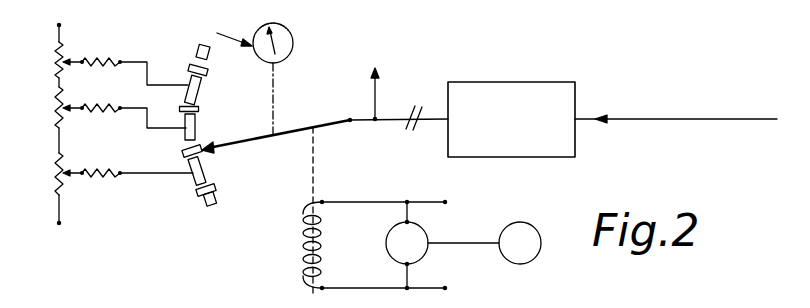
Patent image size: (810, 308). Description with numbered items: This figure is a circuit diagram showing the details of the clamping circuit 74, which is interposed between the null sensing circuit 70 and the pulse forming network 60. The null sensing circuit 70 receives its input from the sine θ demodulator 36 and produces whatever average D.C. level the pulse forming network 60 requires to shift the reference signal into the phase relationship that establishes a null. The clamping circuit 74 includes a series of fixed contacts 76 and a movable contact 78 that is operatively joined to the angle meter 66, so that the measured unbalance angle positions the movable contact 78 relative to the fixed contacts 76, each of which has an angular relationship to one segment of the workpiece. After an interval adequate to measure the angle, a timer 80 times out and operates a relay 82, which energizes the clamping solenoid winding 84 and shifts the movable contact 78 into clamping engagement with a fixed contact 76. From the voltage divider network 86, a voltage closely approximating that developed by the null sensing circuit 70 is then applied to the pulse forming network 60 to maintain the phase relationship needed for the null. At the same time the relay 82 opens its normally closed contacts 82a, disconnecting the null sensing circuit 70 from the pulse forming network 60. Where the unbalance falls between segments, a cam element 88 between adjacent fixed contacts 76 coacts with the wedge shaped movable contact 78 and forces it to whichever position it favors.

The sin demodulator 36 is at (679, 121).
The pulse forming network 60 is at (397, 74).
The angle meter 66 is at (288, 55).
The null sensing circuit 70 is at (555, 87).
The clamping circuit 74 is at (256, 144).
The fixed contacts 76 is at (198, 90).
The movable contact 78 is at (323, 122).
The timer 80 is at (533, 232).
The relay 82 is at (419, 228).
The normally closed contacts 82a is at (417, 127).
The clamping solenoid winding 84 is at (303, 243).
The voltage divider network 86 is at (52, 196).
The cam element 88 is at (198, 192).